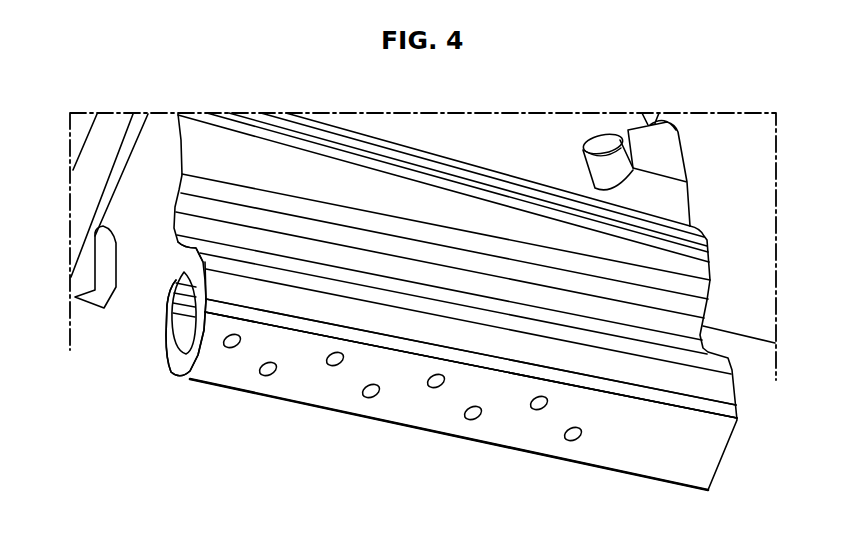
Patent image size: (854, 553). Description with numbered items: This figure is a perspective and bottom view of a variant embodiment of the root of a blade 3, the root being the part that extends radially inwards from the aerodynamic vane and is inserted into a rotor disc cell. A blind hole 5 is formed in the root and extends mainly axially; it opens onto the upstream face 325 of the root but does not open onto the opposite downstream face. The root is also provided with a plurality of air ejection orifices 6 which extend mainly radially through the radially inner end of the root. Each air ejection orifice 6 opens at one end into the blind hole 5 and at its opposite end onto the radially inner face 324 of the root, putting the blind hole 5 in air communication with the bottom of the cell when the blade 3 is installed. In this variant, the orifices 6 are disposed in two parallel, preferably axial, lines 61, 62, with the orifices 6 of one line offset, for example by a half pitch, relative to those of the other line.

The blade 3 is at (401, 460).
The blind hole 5 is at (178, 320).
The air ejection orifices 6 is at (474, 416).
The line of air ejection orifices 61 is at (593, 437).
The line of air ejection orifices 62 is at (212, 337).
The radially inner face 324 is at (508, 423).
The upstream face 325 is at (163, 265).